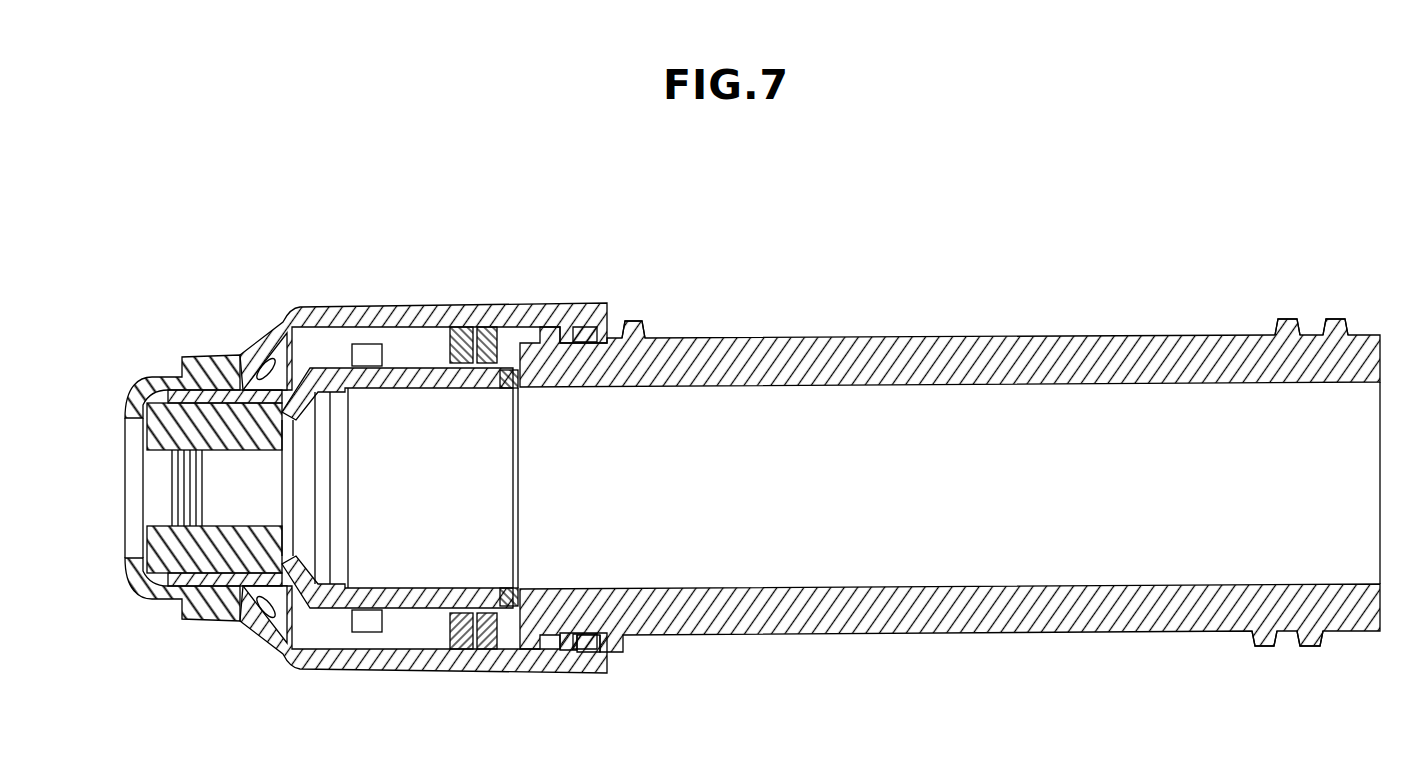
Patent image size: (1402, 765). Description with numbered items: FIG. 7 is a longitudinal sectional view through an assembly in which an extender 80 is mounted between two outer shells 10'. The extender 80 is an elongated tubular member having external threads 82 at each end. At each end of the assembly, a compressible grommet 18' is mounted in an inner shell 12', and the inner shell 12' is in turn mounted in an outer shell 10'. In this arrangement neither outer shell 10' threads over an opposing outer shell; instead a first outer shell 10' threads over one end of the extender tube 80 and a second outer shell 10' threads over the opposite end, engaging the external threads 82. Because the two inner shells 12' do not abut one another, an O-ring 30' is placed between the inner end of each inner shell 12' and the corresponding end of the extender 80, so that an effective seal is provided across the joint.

The outer shell 10' is at (366, 448).
The inner shell 12' is at (459, 488).
The compressible grommet 18' is at (180, 509).
The O-ring 30' is at (537, 488).
The extender 80 is at (931, 337).
The external threads 82 is at (642, 322).